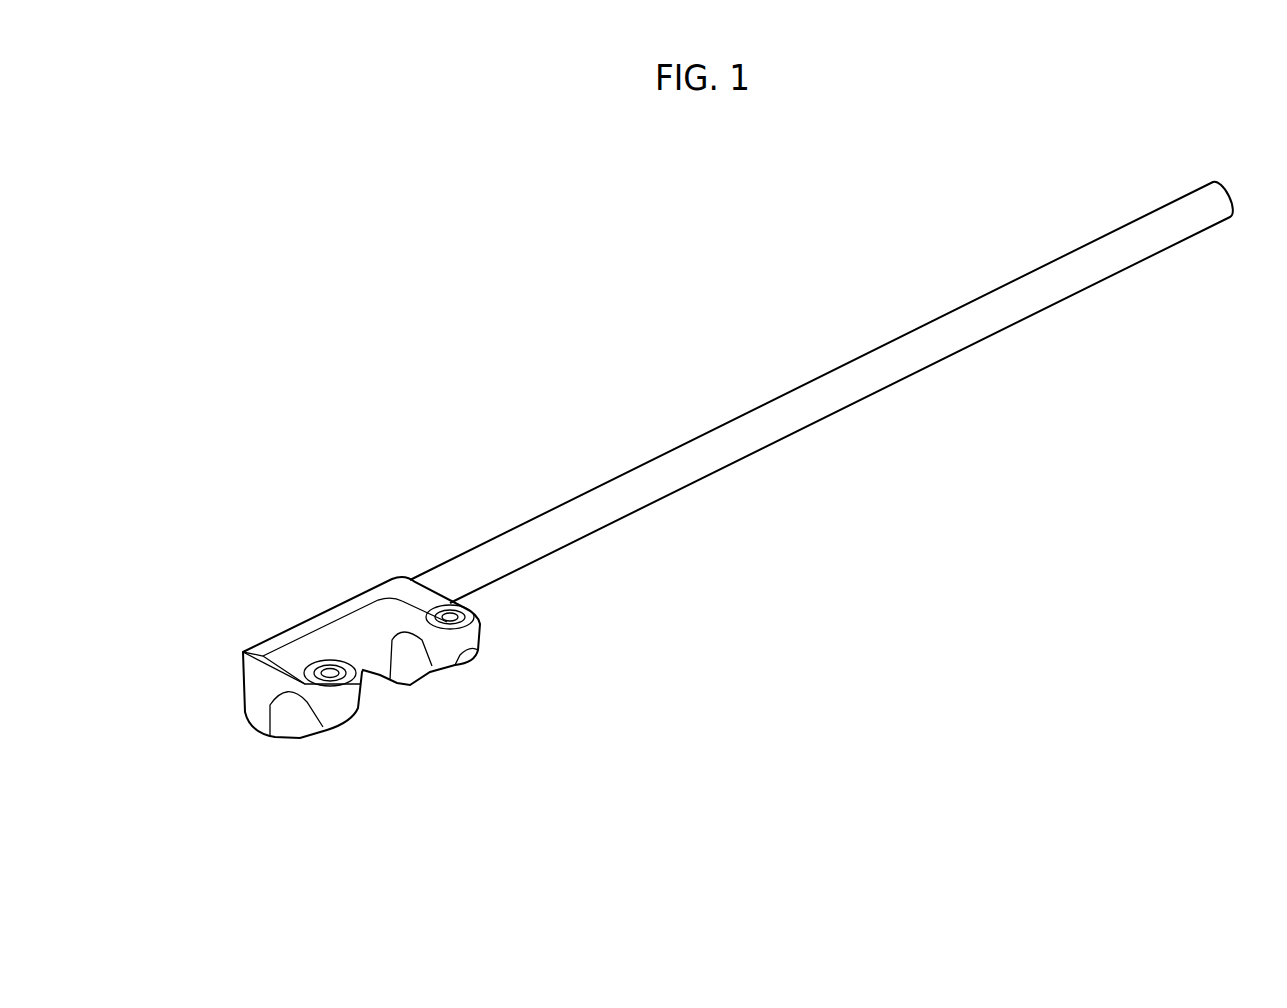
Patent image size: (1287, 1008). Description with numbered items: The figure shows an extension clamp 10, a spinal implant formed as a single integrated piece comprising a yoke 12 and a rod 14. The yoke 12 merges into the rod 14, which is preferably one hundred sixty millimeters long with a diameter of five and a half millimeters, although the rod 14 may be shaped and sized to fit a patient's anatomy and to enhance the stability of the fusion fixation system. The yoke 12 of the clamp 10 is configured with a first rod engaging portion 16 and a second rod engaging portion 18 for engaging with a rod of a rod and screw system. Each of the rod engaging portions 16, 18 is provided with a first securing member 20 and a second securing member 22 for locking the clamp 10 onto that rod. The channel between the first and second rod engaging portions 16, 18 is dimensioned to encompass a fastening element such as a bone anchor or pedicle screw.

The extension clamp 10 is at (423, 332).
The yoke 12 is at (273, 633).
The rod 14 is at (1007, 330).
The first rod engaging portion 16 is at (298, 736).
The second rod engaging portion 18 is at (417, 660).
The first securing member 20 is at (330, 667).
The second securing member 22 is at (455, 617).